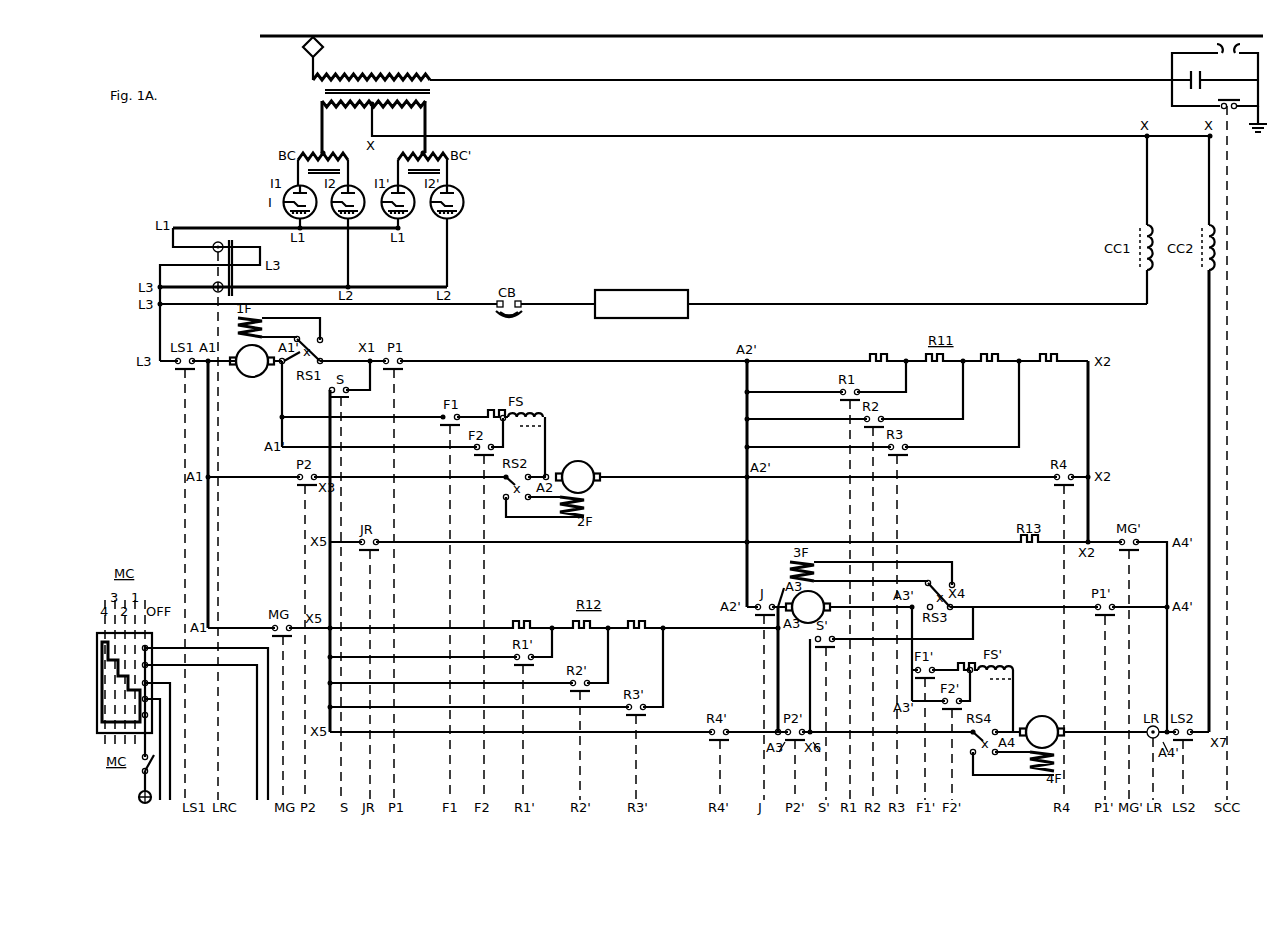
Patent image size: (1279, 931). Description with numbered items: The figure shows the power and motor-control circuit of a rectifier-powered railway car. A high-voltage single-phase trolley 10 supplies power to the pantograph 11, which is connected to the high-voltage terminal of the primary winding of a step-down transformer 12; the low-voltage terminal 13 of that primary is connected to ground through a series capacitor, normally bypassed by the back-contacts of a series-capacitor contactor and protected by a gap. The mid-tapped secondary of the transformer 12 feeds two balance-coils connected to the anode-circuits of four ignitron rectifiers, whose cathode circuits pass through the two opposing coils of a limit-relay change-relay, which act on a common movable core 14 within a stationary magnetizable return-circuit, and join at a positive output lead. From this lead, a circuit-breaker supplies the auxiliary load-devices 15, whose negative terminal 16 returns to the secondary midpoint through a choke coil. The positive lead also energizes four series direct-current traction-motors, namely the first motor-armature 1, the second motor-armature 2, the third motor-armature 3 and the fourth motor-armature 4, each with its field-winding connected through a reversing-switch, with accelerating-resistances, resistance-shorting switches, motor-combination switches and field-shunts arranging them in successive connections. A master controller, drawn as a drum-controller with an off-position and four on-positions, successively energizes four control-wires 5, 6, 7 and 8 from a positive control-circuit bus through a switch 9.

The first motor-armature 1 is at (252, 361).
The second motor-armature 2 is at (578, 477).
The motor-armature 3 is at (808, 607).
The motor-armature 4 is at (1042, 732).
The control-wire 5 is at (153, 748).
The control-wire 6 is at (158, 743).
The control-wire 7 is at (203, 732).
The control-wire 8 is at (210, 732).
The switch 9 is at (143, 778).
The high-voltage single-phase trolley 10 is at (753, 36).
The pantograph 11 is at (323, 58).
The step-down transformer 12 is at (362, 90).
The low-voltage terminal 13 is at (1211, 88).
The common movable core 14 is at (213, 252).
The auxiliary load-devices 15 is at (641, 295).
The negative terminal 16 is at (1158, 291).